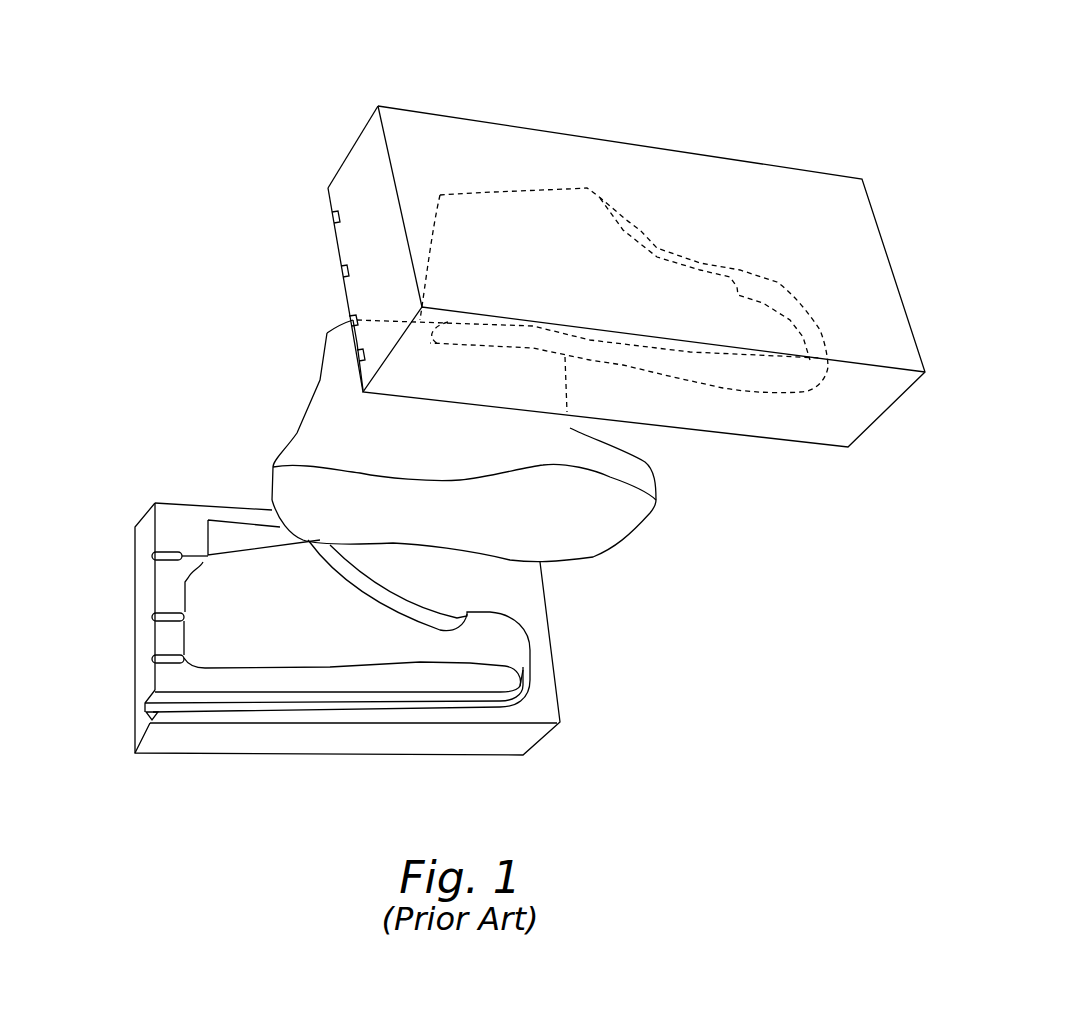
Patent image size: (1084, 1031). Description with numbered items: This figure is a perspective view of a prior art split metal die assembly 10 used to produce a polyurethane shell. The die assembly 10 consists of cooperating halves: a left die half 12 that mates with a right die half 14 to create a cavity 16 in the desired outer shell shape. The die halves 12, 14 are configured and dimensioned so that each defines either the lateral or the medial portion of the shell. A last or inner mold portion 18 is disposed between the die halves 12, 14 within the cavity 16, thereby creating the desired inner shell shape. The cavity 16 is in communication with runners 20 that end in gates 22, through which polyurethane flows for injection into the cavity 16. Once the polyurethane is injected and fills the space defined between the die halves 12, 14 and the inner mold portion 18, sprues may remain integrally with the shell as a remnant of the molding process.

The split metal die assembly 10 is at (161, 102).
The left die half 12 is at (183, 522).
The right die half 14 is at (357, 168).
The cavity 16 is at (575, 234).
The last or inner mold portion 18 is at (315, 432).
The runners 20 is at (343, 272).
The gates 22 is at (183, 661).